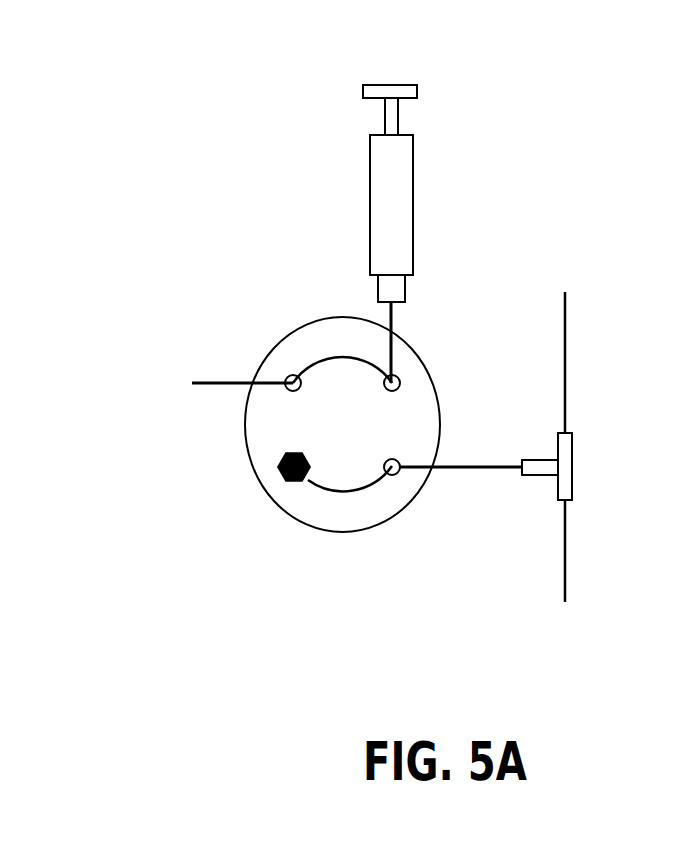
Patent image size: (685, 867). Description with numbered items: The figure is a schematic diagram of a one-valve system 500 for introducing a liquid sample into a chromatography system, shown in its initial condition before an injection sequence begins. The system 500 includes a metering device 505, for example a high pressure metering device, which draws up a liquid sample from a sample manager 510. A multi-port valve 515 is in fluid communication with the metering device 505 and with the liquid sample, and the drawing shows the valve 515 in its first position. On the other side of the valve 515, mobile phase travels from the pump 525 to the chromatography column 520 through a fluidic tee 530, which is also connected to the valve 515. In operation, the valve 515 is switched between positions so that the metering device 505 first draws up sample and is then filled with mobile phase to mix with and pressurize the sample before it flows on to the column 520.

The one-valve system 500 is at (570, 88).
The metering device 505 is at (305, 229).
The sample manager 510 is at (173, 404).
The multi-port valve 515 is at (322, 512).
The chromatography column 520 is at (583, 282).
The pump 525 is at (540, 620).
The fluidic tee 530 is at (573, 460).